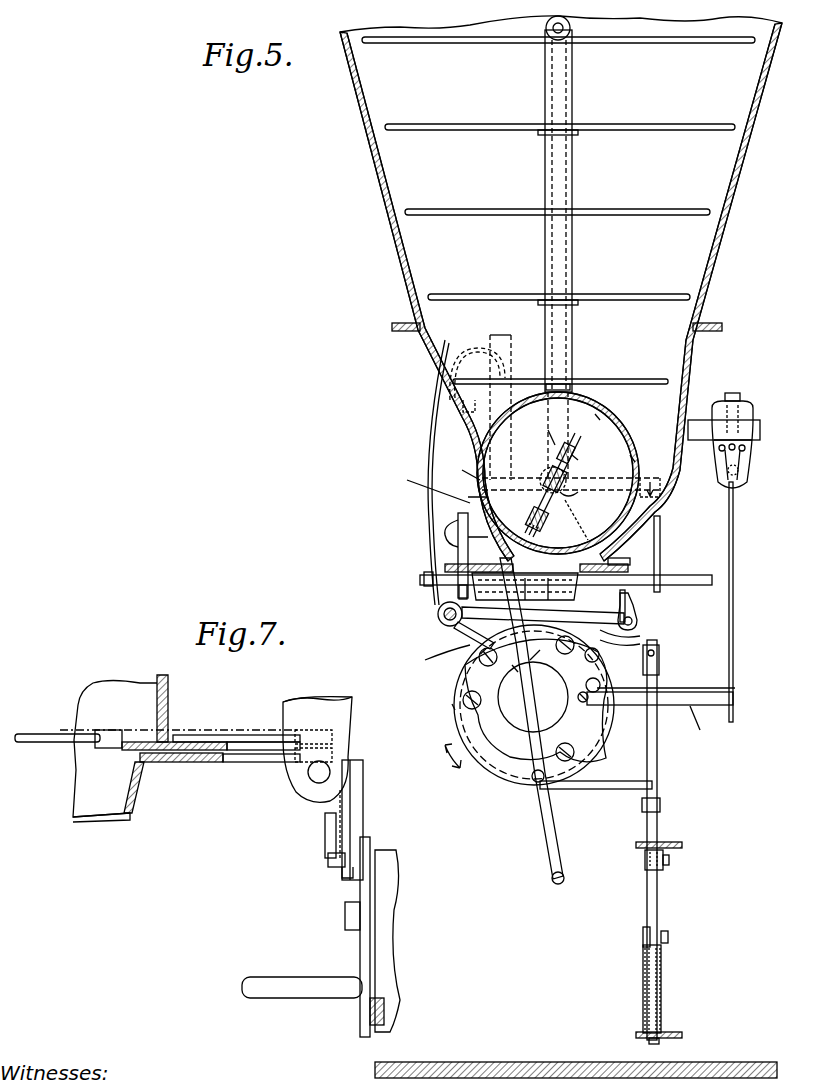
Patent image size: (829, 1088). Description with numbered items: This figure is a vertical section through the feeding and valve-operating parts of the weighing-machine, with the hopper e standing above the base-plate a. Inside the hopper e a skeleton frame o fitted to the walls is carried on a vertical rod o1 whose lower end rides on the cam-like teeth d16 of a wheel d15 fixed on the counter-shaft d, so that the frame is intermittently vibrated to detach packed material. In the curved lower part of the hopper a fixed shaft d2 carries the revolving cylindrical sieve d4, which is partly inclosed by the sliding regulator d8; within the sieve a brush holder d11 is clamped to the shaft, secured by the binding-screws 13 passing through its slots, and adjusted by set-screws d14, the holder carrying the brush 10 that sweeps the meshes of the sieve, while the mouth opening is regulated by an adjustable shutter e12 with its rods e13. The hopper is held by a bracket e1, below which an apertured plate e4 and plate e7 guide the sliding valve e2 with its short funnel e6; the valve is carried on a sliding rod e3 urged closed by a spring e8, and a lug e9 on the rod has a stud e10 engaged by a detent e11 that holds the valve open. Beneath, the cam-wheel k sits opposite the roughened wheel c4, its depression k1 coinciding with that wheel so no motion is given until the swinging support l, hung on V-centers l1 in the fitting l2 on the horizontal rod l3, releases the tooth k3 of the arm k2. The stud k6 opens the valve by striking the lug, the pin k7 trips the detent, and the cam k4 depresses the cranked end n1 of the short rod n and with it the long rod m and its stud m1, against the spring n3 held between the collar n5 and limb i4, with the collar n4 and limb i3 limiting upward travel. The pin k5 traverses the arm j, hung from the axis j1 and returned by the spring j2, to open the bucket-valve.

In FIG. 5, the hopper e is at (388, 214).
In FIG. 7, the hopper e is at (180, 746).
In FIG. 5, the skeleton frame o is at (462, 212).
In FIG. 5, the vertical rod o1 is at (568, 182).
In FIG. 5, the bracket e1 is at (485, 340).
In FIG. 5, the spring e8 is at (430, 431).
In FIG. 5, the counter-shaft d is at (545, 447).
In FIG. 5, the drum opening 10 is at (460, 464).
In FIG. 5, the drum slot 13 is at (540, 428).
In FIG. 5, the fixed shaft d2 is at (568, 470).
In FIG. 5, the cylindrical sieve d4 is at (600, 416).
In FIG. 5, the imperforate cylinder or regulator d8 is at (632, 458).
In FIG. 5, the brush holder d11 is at (563, 519).
In FIG. 5, the set-screws d14 is at (575, 456).
In FIG. 5, the wheel d15 is at (567, 448).
In FIG. 5, the cam-like teeth d16 is at (575, 489).
In FIG. 5, the horizontally-adjustable shutter e12 is at (591, 520).
In FIG. 7, the horizontally-adjustable shutter e12 is at (230, 740).
In FIG. 5, the axis of motion j1 is at (439, 535).
In FIG. 5, the sliding rod e3 is at (420, 581).
In FIG. 7, the sliding rod e3 is at (313, 780).
In FIG. 5, the apertured plate e4 is at (625, 580).
In FIG. 7, the apertured plate e4 is at (168, 725).
In FIG. 5, the sliding shutter or valve e2 is at (650, 594).
In FIG. 7, the sliding shutter or valve e2 is at (150, 762).
In FIG. 5, the short funnel e6 is at (578, 598).
In FIG. 7, the short funnel e6 is at (138, 790).
In FIG. 5, the roughened wheel c4 is at (640, 610).
In FIG. 5, the finger or detent e11 is at (640, 620).
In FIG. 7, the finger or detent e11 is at (325, 842).
In FIG. 5, the plate-lug or projection e9 is at (642, 632).
In FIG. 7, the plate-lug or projection e9 is at (345, 876).
In FIG. 5, the laterally-projecting stud e10 is at (645, 645).
In FIG. 7, the laterally-projecting stud e10 is at (328, 862).
In FIG. 5, the plate e7 is at (455, 628).
In FIG. 7, the plate e7 is at (112, 818).
In FIG. 5, the pin or stud k7 is at (478, 658).
In FIG. 5, the cam-wheel or cylinder k is at (600, 658).
In FIG. 7, the cam-wheel or cylinder k is at (388, 912).
In FIG. 5, the cam k4 is at (452, 706).
In FIG. 7, the cam k4 is at (362, 955).
In FIG. 5, the depression k1 is at (545, 644).
In FIG. 5, the spring j2 is at (506, 659).
In FIG. 5, the laterally-projecting pin k5 is at (660, 683).
In FIG. 7, the laterally-projecting pin k5 is at (262, 978).
In FIG. 5, the ratchet-like tooth k3 is at (733, 694).
In FIG. 5, the arm or lever k2 is at (701, 719).
In FIG. 7, the arm or lever k2 is at (384, 1012).
In FIG. 5, the arm or lever j is at (558, 838).
In FIG. 5, the cranked upper end n1 is at (535, 783).
In FIG. 5, the short vertical rod n is at (596, 794).
In FIG. 5, the vertical rod m is at (657, 772).
In FIG. 5, the stud m1 is at (660, 657).
In FIG. 5, the limb i3 is at (675, 844).
In FIG. 5, the collar n4 is at (672, 864).
In FIG. 5, the collar n5 is at (665, 928).
In FIG. 5, the spring n3 is at (662, 1005).
In FIG. 5, the limb i4 is at (684, 1033).
In FIG. 5, the forked frame-like fitting l2 is at (738, 418).
In FIG. 5, the horizontal rod l3 is at (760, 430).
In FIG. 5, the V-centers l1 is at (738, 478).
In FIG. 5, the swinging support l is at (736, 526).
In FIG. 5, the base-plate a is at (542, 1062).
In FIG. 7, the rods e13 is at (36, 734).
In FIG. 7, the laterally-projecting stud k6 is at (345, 918).